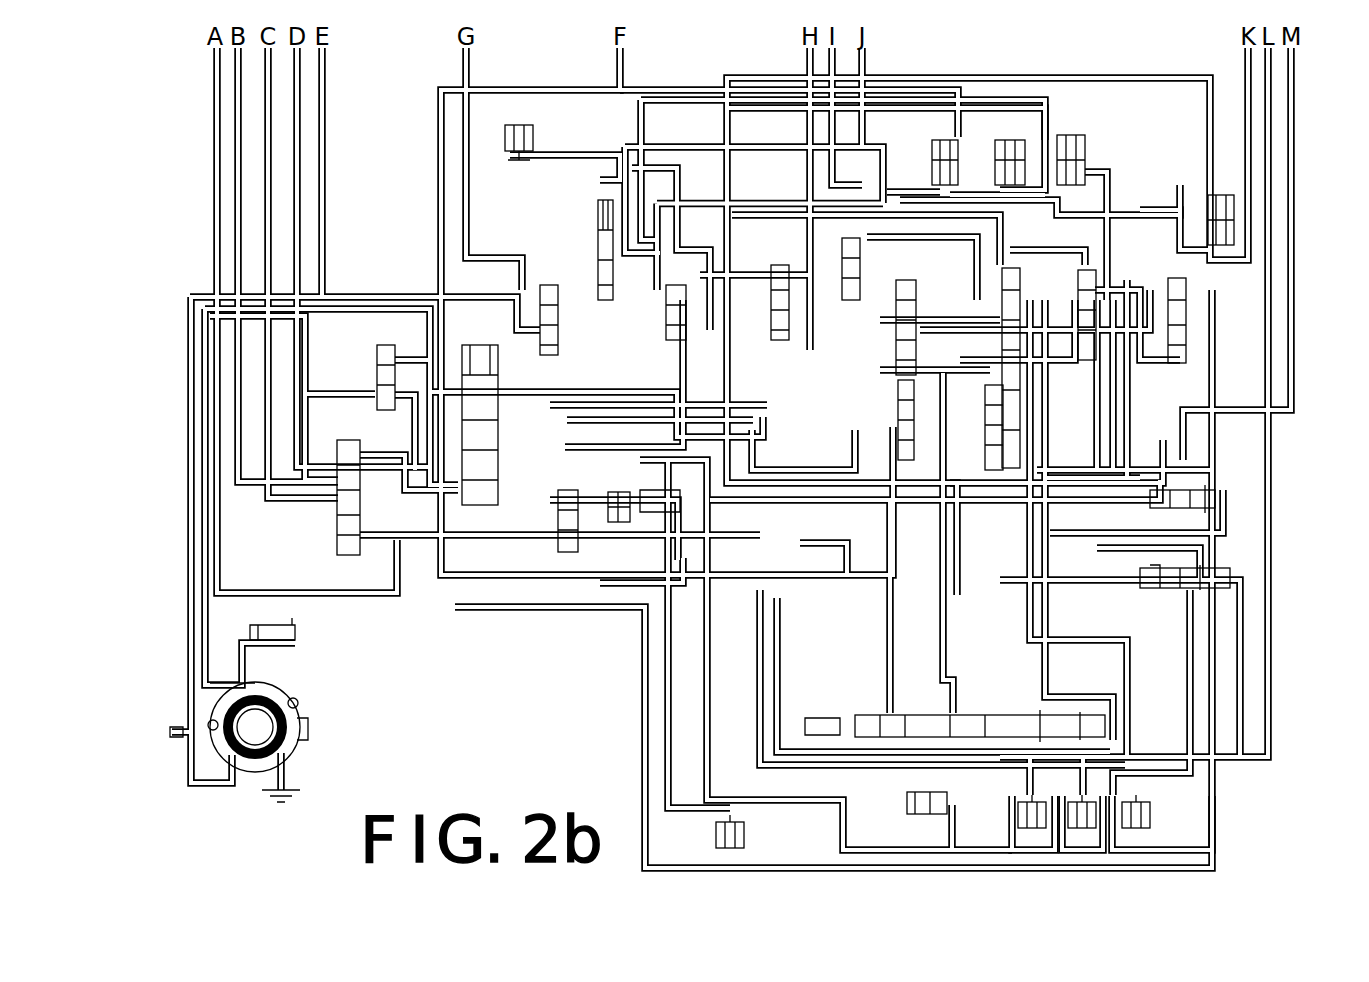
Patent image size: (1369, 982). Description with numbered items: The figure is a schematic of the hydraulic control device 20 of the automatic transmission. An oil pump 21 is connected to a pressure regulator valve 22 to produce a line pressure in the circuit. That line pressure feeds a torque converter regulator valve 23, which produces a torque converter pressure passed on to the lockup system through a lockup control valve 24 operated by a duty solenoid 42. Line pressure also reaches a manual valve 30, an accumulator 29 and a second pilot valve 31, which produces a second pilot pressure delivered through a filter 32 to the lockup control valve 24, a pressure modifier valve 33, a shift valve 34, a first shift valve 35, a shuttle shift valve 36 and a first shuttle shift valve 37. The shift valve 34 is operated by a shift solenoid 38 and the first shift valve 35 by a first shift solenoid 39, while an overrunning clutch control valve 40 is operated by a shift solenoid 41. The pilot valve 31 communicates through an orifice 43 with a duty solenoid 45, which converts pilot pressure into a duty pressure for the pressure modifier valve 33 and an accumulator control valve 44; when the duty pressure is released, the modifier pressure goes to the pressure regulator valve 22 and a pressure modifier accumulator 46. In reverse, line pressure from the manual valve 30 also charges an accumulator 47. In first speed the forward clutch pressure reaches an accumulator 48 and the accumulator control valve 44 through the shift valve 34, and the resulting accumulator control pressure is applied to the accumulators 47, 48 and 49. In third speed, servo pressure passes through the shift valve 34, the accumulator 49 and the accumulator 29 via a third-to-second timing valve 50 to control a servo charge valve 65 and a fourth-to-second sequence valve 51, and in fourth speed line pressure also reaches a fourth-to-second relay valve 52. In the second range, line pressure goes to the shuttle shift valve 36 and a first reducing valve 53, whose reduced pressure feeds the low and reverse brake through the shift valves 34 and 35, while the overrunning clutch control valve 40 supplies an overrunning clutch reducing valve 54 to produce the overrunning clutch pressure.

The hydraulic control device 20 is at (1320, 136).
The oil pump 21 is at (300, 722).
The pressure regulator valve 22 is at (482, 505).
The torque converter regulator valve 23 is at (378, 352).
The lockup control valve 24 is at (350, 440).
The accumulator 29 is at (1085, 137).
The manual valve 30 is at (1005, 698).
The second pilot valve 31 is at (556, 540).
The filter 32 is at (618, 522).
The pressure modifier valve 33 is at (565, 270).
The shift valve 34 is at (1020, 270).
The first shift valve 35 is at (902, 280).
The shuttle shift valve 36 is at (1245, 592).
The first shuttle shift valve 37 is at (780, 265).
The shift solenoid 38 is at (1085, 830).
The first shift solenoid 39 is at (1032, 830).
The overrunning clutch control valve 40 is at (1096, 280).
The shift solenoid 41 is at (1150, 822).
The duty solenoid 42 is at (560, 125).
The orifice 43 is at (656, 510).
The accumulator control valve 44 is at (700, 295).
The duty solenoid 45 is at (744, 835).
The pressure modifier accumulator 46 is at (910, 806).
The accumulator 47 is at (932, 150).
The accumulator 48 is at (1210, 215).
The accumulator 49 is at (1020, 142).
The 3-2 timing valve 50 is at (845, 270).
The 4-2 sequence valve 51 is at (900, 458).
The 4-2 relay valve 52 is at (996, 475).
The first reducing valve 53 is at (1215, 502).
The overrunning clutch reducing valve 54 is at (1186, 286).
The servo charge valve 65 is at (596, 222).